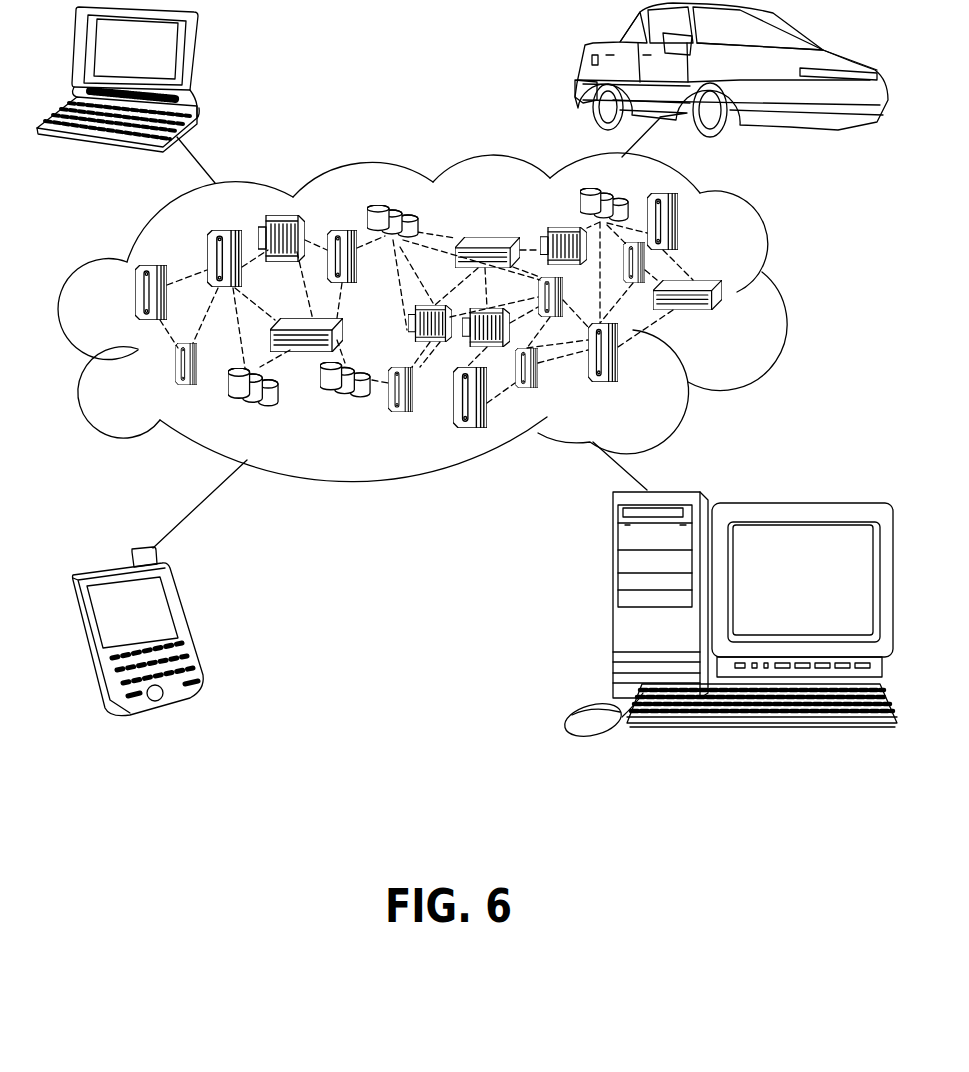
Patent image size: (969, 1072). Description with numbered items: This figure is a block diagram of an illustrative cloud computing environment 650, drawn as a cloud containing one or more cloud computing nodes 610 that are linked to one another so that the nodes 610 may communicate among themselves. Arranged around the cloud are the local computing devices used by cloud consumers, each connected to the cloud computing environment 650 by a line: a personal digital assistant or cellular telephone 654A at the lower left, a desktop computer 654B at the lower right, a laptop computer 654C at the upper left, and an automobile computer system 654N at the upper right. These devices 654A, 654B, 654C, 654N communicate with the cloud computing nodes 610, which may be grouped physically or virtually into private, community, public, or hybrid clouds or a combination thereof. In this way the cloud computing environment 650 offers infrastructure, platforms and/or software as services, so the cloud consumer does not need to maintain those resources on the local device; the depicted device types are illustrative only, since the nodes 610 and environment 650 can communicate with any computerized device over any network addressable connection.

The cloud computing nodes 610 is at (742, 315).
The cloud computing environment 650 is at (767, 253).
The personal digital assistant (PDA) or cellular telephone 654A is at (188, 620).
The desktop computer 654B is at (610, 605).
The laptop computer 654C is at (197, 60).
The automobile computer system 654N is at (583, 62).